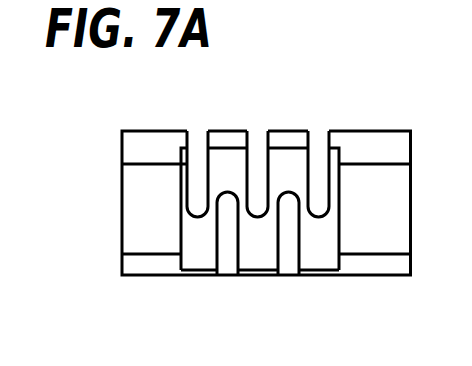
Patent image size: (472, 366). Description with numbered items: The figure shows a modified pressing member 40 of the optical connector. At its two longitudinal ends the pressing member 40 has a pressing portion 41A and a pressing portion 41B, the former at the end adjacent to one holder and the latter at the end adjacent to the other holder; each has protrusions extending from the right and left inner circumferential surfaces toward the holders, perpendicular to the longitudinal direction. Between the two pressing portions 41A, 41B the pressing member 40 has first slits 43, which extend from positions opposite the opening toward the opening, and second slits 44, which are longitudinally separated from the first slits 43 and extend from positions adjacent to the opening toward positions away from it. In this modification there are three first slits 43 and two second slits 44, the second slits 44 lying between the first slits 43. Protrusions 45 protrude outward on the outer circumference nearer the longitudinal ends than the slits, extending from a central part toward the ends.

The pressing member 40 is at (150, 183).
The pressing portion 41A is at (137, 208).
The pressing portion 41B is at (390, 217).
The first slits 43 is at (318, 180).
The second slits 44 is at (292, 243).
The protrusions 45 is at (365, 192).